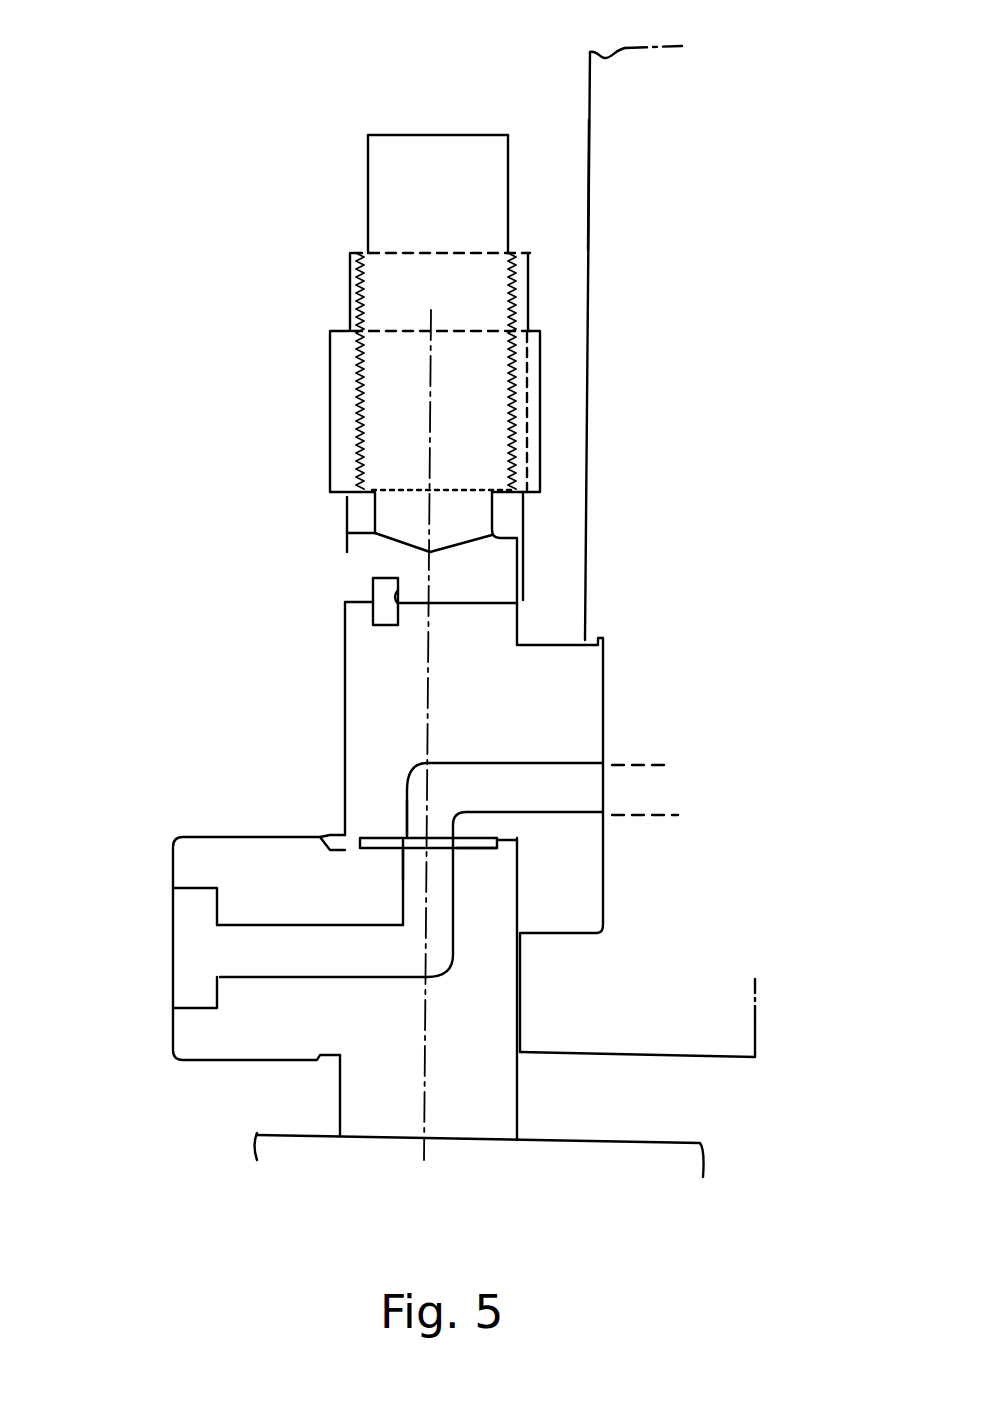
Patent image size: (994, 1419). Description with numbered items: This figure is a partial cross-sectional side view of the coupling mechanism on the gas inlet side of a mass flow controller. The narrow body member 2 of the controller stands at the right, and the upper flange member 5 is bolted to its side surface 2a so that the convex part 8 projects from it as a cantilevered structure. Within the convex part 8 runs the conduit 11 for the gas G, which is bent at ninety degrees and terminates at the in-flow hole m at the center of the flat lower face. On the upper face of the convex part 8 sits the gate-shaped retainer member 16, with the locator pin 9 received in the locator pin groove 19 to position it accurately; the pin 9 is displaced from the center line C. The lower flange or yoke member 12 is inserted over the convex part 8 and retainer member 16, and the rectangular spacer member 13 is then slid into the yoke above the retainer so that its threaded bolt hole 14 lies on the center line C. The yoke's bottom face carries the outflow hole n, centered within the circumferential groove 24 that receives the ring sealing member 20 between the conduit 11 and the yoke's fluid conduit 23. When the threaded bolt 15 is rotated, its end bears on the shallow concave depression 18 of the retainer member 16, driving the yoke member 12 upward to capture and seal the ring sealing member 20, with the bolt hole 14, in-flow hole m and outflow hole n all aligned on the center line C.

The body member 2 is at (578, 69).
The side surface 2a is at (589, 133).
The threaded bolt 15 is at (367, 190).
The bolt hole 14 is at (510, 413).
The spacer member 13 is at (328, 383).
The retainer member 16 is at (347, 548).
The concave depression 18 is at (432, 552).
The locator pin 9 is at (373, 593).
The locator pin groove 19 is at (400, 598).
The upper flange member 5 is at (345, 653).
The convex part 8 is at (360, 705).
The conduit 11 is at (530, 770).
The in-flow hole m is at (407, 835).
The outflow hole n is at (407, 857).
The ring sealing member 20 is at (457, 842).
The circumferential groove 24 is at (480, 848).
The lower flange or yoke member 12 is at (248, 1063).
The fluid conduit 23 is at (265, 958).
The gas G is at (150, 943).
The center line C is at (423, 1043).